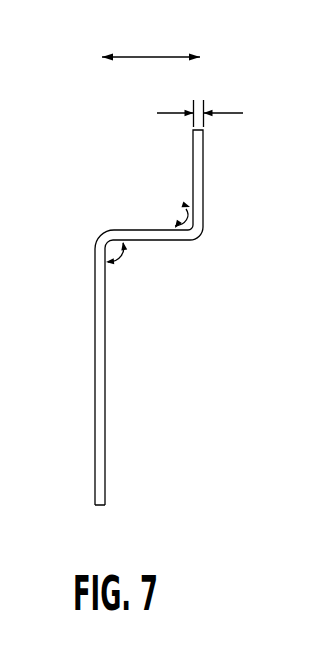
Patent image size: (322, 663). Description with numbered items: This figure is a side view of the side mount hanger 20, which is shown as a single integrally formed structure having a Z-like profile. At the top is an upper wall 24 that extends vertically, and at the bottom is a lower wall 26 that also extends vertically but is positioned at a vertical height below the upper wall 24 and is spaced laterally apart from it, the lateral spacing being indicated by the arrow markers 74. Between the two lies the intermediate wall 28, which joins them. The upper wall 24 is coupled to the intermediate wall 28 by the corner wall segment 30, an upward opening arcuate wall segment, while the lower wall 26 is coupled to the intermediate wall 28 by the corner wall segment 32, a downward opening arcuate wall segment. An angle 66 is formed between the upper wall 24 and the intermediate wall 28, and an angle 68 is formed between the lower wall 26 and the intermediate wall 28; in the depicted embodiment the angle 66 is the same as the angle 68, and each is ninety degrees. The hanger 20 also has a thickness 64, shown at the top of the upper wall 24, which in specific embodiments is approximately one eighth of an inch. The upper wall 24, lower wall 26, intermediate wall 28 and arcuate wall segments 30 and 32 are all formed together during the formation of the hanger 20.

The hanger 20 is at (159, 281).
The upper wall 24 is at (200, 172).
The lower wall 26 is at (105, 360).
The intermediate wall 28 is at (130, 230).
The corner wall segment 30 is at (196, 222).
The corner wall segment 32 is at (98, 236).
The thickness 64 is at (200, 105).
The angle 66 is at (188, 207).
The angle 68 is at (122, 256).
The arrow markers 74 is at (151, 44).